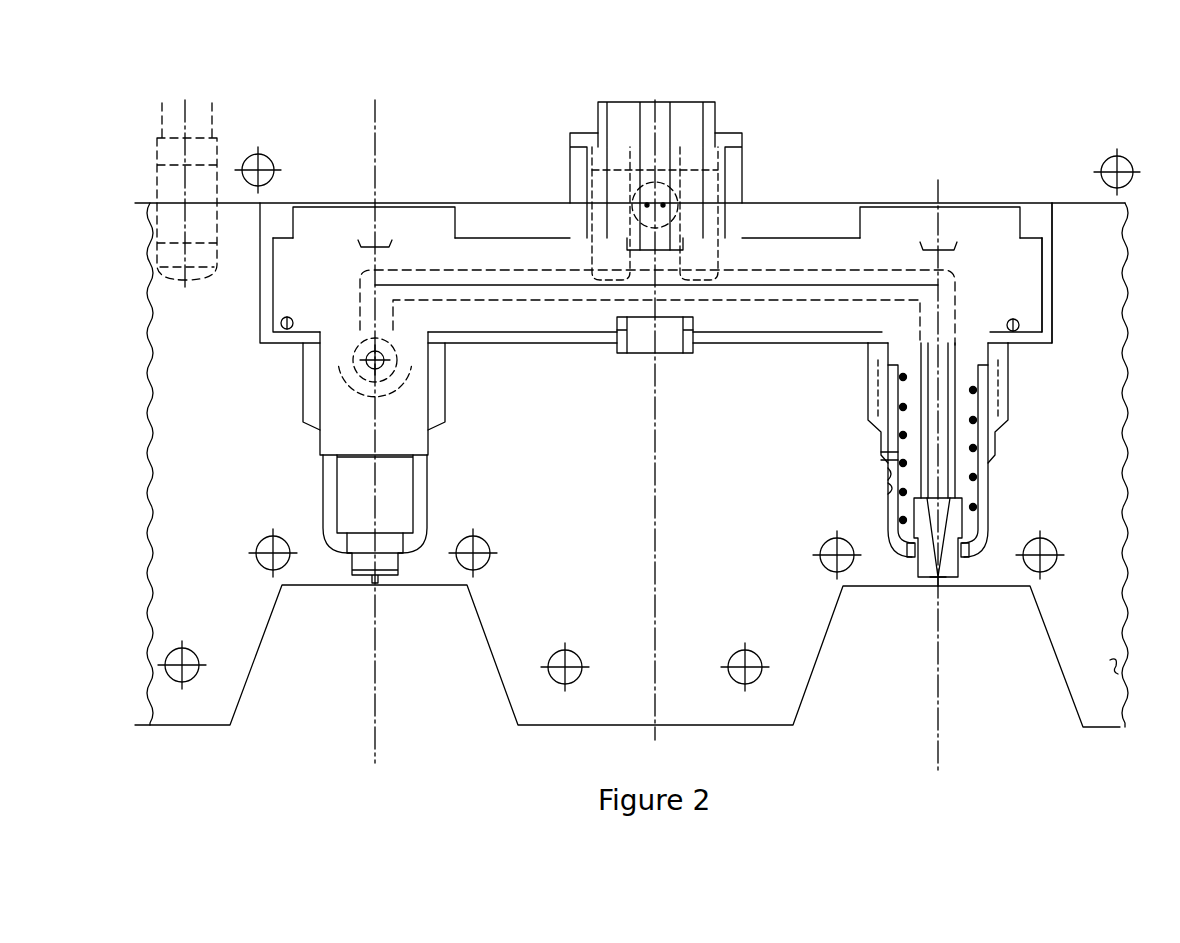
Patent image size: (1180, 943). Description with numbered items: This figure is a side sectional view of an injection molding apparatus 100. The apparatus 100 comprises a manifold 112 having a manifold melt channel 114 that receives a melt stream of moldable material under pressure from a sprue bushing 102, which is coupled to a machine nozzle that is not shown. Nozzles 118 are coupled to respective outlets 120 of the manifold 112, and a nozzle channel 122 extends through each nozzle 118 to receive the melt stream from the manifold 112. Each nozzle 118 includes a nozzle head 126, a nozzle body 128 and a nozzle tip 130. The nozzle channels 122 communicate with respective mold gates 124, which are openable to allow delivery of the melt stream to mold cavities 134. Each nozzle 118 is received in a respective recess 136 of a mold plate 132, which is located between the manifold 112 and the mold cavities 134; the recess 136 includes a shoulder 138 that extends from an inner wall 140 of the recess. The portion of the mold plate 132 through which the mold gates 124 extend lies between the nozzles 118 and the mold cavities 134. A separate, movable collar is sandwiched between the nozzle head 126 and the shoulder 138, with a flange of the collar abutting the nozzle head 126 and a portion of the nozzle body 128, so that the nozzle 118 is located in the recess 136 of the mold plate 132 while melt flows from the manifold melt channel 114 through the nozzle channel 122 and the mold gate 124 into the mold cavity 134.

The injection molding apparatus 100 is at (931, 113).
The sprue bushing 102 is at (690, 128).
The manifold 112 is at (293, 290).
The manifold melt channel 114 is at (801, 284).
The nozzle 118 is at (962, 470).
The outlet 120 is at (1050, 343).
The nozzle channel 122 is at (972, 390).
The mold gate 124 is at (943, 580).
The nozzle head 126 is at (885, 343).
The nozzle body 128 is at (910, 385).
The nozzle tip 130 is at (980, 552).
The mold plate 132 is at (764, 471).
The mold cavity 134 is at (928, 624).
The recess 136 is at (890, 470).
The shoulder 138 is at (887, 455).
The inner wall 140 is at (890, 484).